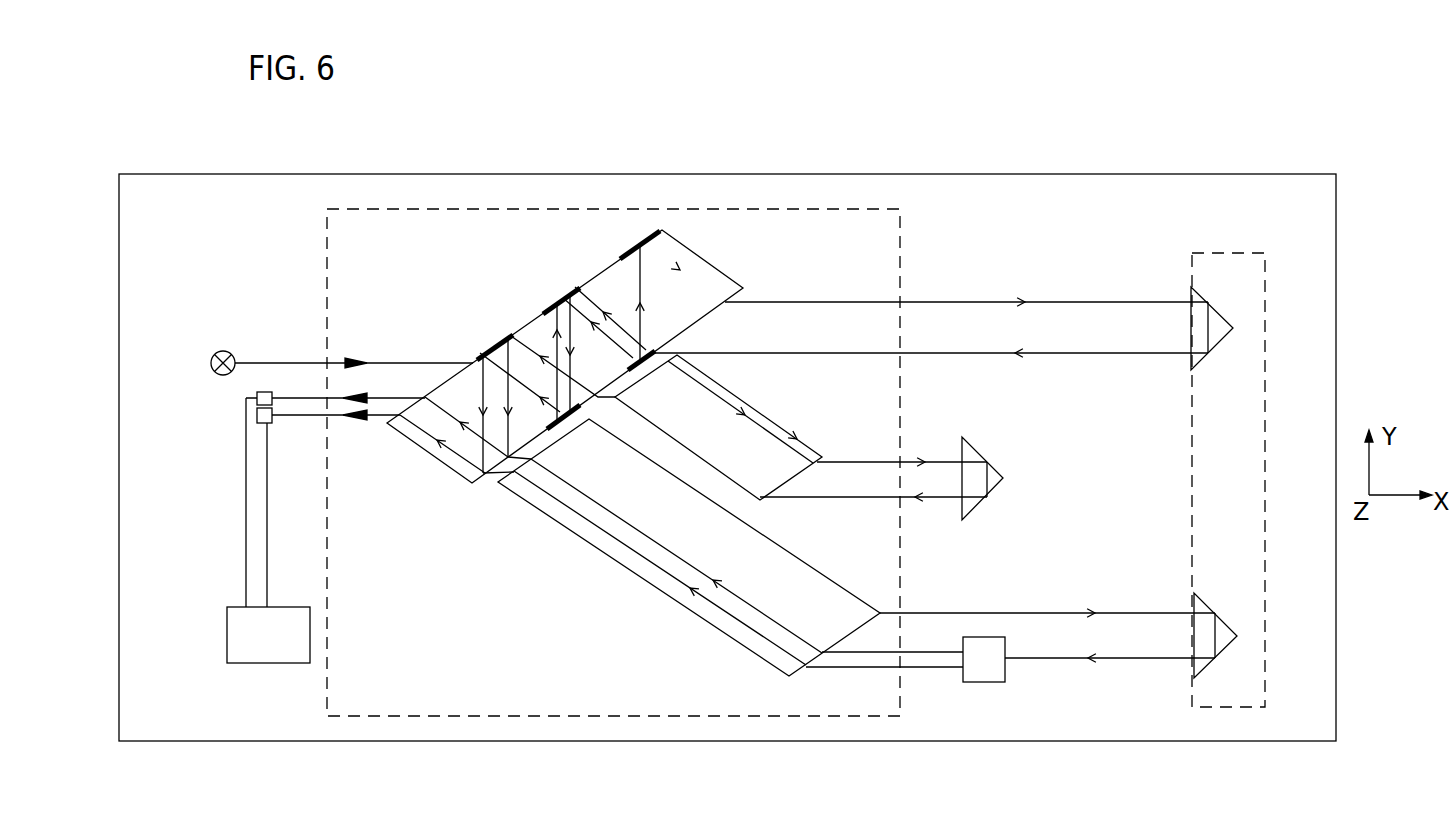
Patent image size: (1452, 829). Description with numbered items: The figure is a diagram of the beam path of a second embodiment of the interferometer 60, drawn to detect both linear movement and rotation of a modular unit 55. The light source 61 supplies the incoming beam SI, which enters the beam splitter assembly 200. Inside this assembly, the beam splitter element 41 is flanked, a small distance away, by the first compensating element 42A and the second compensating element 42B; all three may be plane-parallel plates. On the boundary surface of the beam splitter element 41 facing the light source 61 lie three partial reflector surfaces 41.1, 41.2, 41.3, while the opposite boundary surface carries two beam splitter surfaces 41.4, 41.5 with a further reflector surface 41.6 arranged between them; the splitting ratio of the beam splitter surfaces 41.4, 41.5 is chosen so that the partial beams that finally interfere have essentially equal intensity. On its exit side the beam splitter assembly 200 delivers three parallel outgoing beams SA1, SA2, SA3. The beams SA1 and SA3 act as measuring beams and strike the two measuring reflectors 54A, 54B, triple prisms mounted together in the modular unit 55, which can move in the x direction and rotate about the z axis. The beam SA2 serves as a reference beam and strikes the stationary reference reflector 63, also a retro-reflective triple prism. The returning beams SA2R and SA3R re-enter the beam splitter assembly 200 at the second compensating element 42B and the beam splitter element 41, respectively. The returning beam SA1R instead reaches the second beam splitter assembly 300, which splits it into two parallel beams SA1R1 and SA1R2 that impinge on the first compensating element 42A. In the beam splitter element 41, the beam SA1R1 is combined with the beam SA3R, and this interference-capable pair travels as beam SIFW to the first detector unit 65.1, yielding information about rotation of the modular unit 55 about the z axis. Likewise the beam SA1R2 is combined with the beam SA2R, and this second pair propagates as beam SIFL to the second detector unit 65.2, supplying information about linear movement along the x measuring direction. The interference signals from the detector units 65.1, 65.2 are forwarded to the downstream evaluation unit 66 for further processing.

The interferometer 60 is at (405, 173).
The beam splitter assembly 200 is at (818, 210).
The modular unit 55 is at (1265, 447).
The light source 61 is at (223, 352).
The incoming beam SI is at (277, 362).
The beam SIFL is at (310, 397).
The beam SIFW is at (297, 417).
The second detector unit 65.2 is at (257, 395).
The first detector unit 65.1 is at (257, 413).
The evaluation unit 66 is at (267, 648).
The beam splitter element 41 is at (592, 270).
The reflector surface 41.1 is at (480, 340).
The reflector surface 41.2 is at (560, 296).
The reflector surface 41.3 is at (645, 241).
The beam splitter surface 41.4 is at (540, 468).
The beam splitter surface 41.5 is at (647, 355).
The reflector surface 41.6 is at (572, 425).
The first compensating element 42A is at (617, 578).
The second compensating element 42B is at (797, 425).
The first outgoing beam SA1 is at (1137, 612).
The reflected beam SA1R is at (1138, 660).
The outgoing beam SA1R1 is at (858, 669).
The outgoing beam SA1R2 is at (685, 562).
The third outgoing beam SA2 is at (933, 465).
The reflected beam SA2R is at (863, 500).
The outgoing beam SA3 is at (962, 300).
The reflected beam SA3R is at (1127, 355).
The measuring reflector 54A is at (1227, 620).
The measuring reflector 54B is at (1223, 307).
The reference reflector 63 is at (998, 466).
The second beam splitter assembly 300 is at (983, 683).